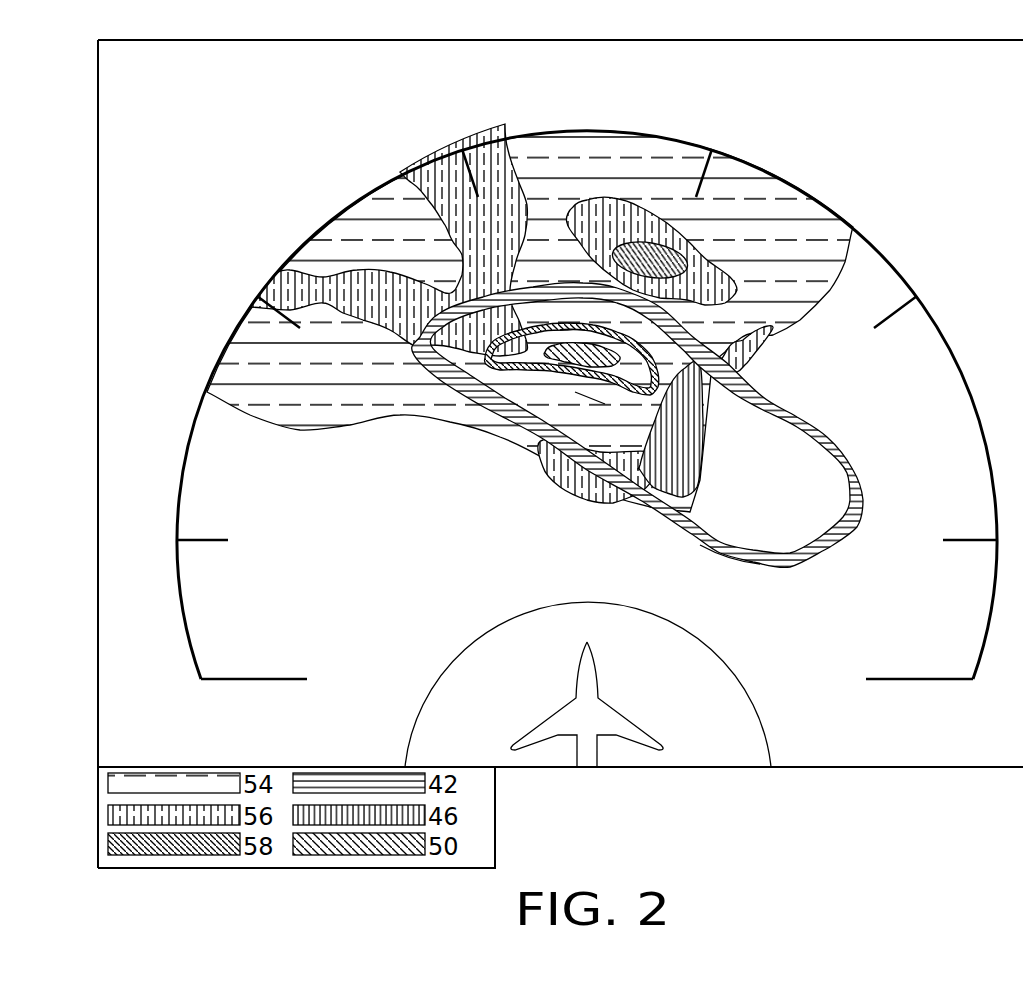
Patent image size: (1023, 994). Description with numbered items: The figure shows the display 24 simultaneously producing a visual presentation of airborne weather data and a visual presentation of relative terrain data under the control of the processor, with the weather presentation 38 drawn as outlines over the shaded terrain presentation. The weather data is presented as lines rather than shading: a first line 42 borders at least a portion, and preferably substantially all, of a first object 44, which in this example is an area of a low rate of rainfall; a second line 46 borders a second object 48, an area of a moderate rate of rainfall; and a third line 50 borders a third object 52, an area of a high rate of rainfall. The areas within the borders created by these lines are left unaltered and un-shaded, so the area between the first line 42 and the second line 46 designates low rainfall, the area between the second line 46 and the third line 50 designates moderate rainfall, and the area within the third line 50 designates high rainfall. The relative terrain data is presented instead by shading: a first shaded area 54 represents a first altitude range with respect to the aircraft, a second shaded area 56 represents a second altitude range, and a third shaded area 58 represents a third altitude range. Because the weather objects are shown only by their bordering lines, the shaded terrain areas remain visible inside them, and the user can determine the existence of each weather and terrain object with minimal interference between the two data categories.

The display 24 is at (122, 146).
The weather radar display region 38 is at (498, 118).
The first line 42 is at (830, 418).
The first object 44 is at (717, 578).
The second line 46 is at (700, 438).
The second object 48 is at (586, 405).
The third line 50 is at (603, 347).
The third object 52 is at (572, 335).
The first shaded area 54 is at (792, 232).
The second shaded area 56 is at (466, 184).
The third shaded area 58 is at (587, 316).